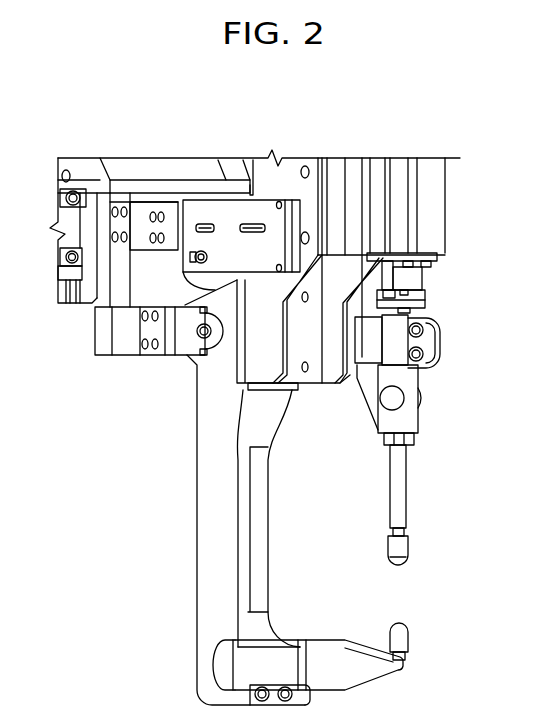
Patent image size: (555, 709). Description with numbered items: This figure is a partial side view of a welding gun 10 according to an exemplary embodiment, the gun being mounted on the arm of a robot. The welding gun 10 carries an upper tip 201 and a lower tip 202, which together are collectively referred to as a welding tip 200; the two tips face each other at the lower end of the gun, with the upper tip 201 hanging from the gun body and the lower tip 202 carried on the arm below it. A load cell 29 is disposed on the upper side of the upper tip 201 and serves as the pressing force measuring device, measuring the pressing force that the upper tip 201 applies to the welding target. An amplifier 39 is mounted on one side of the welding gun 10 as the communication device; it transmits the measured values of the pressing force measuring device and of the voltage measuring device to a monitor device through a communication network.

The amplifier 39 is at (178, 263).
The load cell 29 is at (435, 300).
The welding gun 10 is at (430, 398).
The welding tip 200 is at (459, 552).
The upper tip 201 is at (402, 549).
The lower tip 202 is at (434, 641).